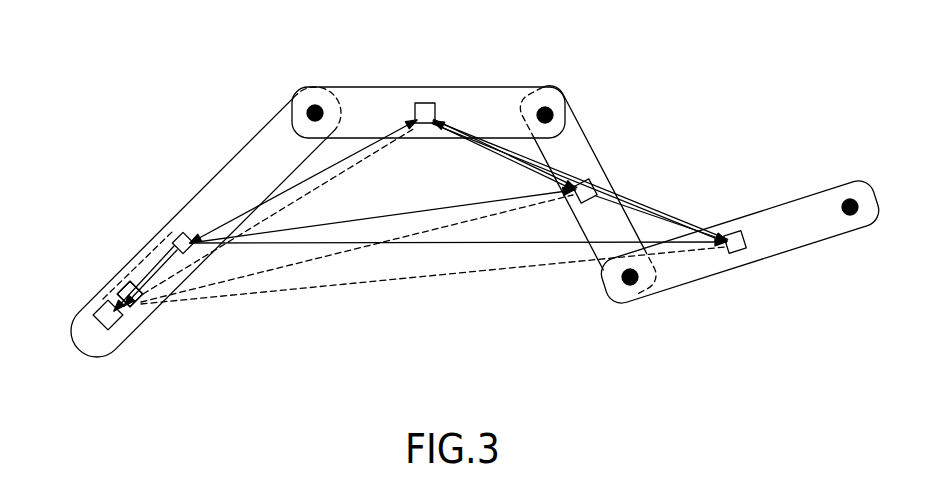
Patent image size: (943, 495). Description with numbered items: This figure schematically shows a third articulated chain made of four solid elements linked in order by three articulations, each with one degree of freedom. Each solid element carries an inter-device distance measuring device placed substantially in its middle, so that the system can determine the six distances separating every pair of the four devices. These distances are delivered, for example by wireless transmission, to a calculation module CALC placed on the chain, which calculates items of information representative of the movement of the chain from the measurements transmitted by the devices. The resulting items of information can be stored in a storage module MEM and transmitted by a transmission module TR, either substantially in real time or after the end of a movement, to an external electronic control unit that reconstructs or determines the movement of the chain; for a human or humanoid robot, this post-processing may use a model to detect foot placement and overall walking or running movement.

The calculation module CALC is at (104, 306).
The storage module MEM is at (128, 283).
The transmission module TR is at (134, 287).